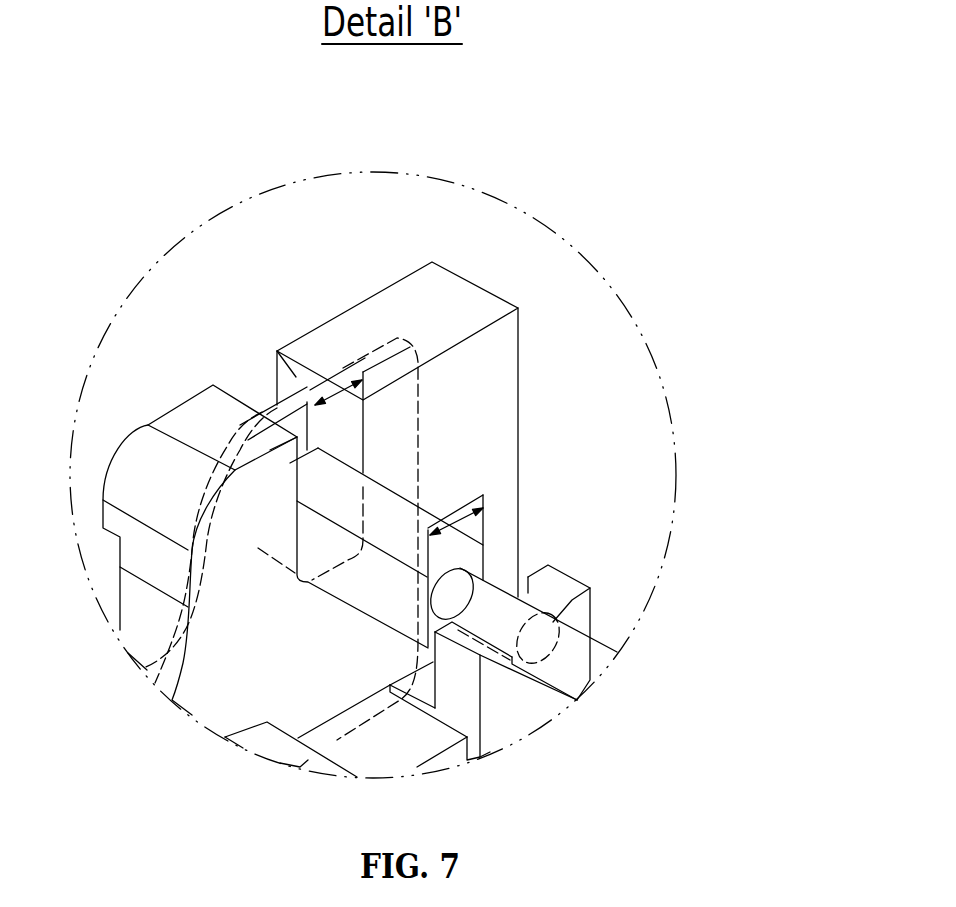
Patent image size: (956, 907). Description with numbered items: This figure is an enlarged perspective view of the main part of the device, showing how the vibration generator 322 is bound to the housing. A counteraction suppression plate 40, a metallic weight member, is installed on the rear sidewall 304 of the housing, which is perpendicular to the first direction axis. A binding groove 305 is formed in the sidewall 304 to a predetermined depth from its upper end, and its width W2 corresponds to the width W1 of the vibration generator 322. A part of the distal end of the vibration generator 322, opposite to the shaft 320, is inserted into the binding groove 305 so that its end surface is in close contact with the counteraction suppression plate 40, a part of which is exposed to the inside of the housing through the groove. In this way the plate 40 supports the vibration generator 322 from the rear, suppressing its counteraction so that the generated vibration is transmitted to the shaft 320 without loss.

The counteraction suppression plate 40 is at (265, 405).
The sidewall 304 is at (450, 313).
The binding groove 305 is at (272, 404).
The shaft 320 is at (485, 603).
The vibration generator 322 is at (393, 517).
The width of the vibration generator W1 is at (463, 507).
The width of the binding groove W2 is at (342, 388).